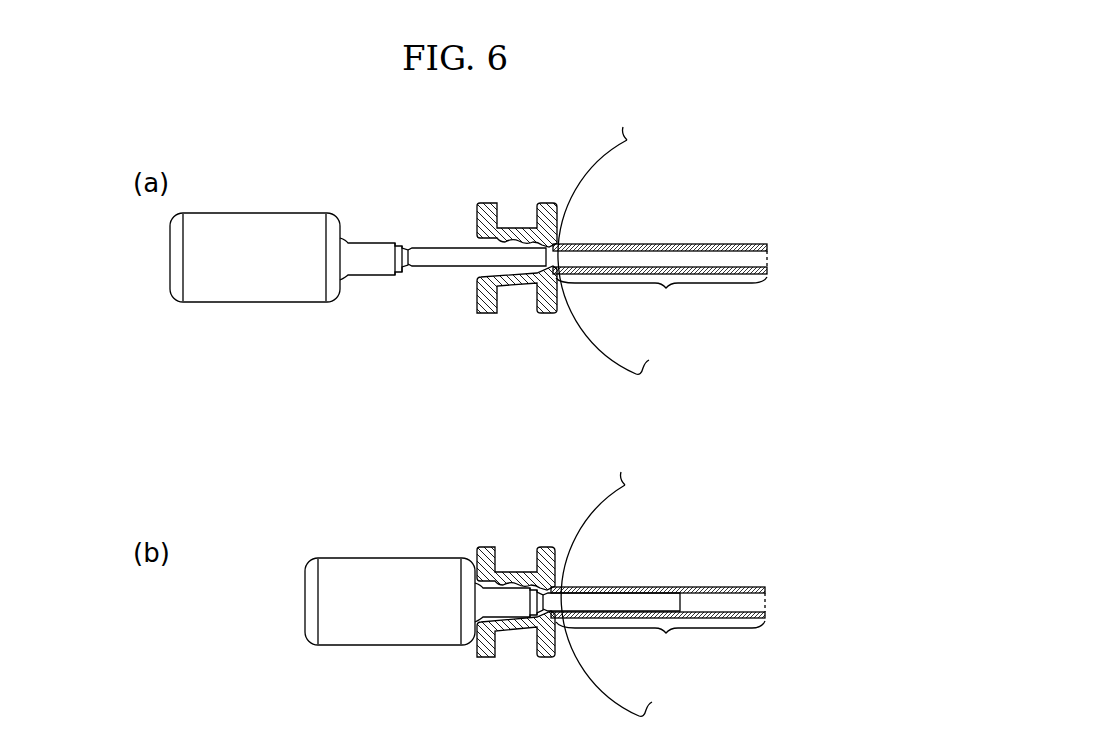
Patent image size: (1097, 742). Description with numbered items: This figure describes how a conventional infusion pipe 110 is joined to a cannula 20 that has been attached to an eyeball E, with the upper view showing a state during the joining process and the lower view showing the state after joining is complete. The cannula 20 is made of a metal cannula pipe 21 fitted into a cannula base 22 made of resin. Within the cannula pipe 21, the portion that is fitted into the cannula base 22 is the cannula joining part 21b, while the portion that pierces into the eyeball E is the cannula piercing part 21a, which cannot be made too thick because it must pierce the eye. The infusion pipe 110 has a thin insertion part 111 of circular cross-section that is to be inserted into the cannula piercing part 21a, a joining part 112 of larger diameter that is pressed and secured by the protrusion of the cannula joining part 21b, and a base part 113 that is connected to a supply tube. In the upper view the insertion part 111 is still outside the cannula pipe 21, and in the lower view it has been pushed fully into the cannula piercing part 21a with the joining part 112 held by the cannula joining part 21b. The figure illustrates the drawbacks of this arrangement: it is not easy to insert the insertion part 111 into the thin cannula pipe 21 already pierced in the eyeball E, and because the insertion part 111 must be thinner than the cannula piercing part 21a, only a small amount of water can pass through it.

The infusion pipe 110 is at (311, 201).
The insertion part 111 is at (452, 256).
The joining part 112 is at (371, 263).
The base part 113 is at (263, 286).
The cannula 20 is at (503, 195).
The cannula pipe 21 is at (660, 245).
The cannula piercing part 21a is at (661, 283).
The cannula joining part 21b is at (509, 240).
The cannula base 22 is at (545, 295).
The eyeball E is at (587, 168).